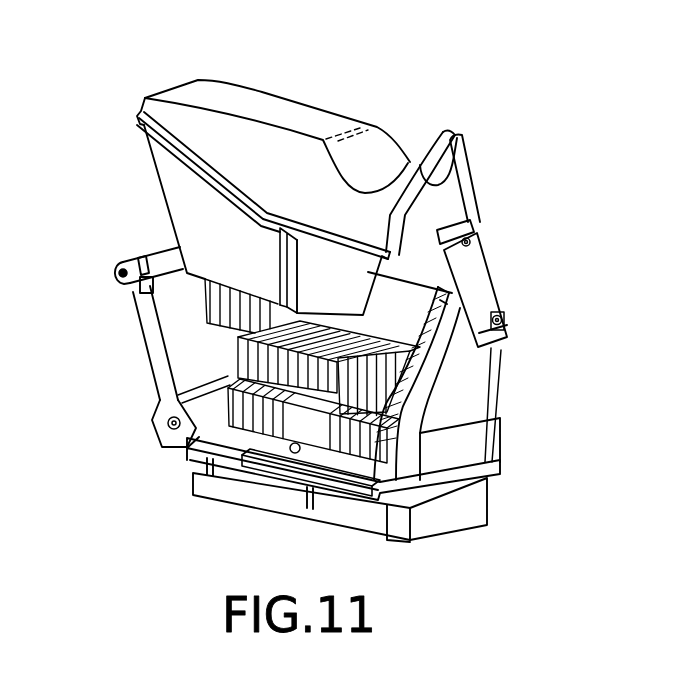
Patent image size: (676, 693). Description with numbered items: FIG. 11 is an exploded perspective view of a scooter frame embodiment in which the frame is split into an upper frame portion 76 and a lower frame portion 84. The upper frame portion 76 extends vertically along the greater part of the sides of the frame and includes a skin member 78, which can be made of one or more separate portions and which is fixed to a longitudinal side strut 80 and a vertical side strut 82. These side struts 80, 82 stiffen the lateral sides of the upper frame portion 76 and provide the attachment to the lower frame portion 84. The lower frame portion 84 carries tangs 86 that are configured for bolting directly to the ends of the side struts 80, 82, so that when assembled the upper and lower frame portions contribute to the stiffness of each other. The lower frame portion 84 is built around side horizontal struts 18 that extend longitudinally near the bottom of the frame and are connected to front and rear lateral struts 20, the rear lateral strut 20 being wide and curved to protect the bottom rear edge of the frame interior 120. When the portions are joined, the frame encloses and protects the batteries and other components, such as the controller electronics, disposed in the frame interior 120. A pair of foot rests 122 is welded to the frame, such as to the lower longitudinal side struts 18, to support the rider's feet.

The upper frame portion 76 is at (205, 101).
The skin member 78 is at (223, 160).
The longitudinal side strut 80 is at (237, 205).
The vertical side strut 82 is at (283, 268).
The lateral strut 20 is at (185, 405).
The tang 86 is at (120, 276).
The side horizontal strut 18 is at (217, 452).
The foot rest 122 is at (327, 484).
The frame interior 120 is at (418, 271).
The lower frame portion 84 is at (483, 396).